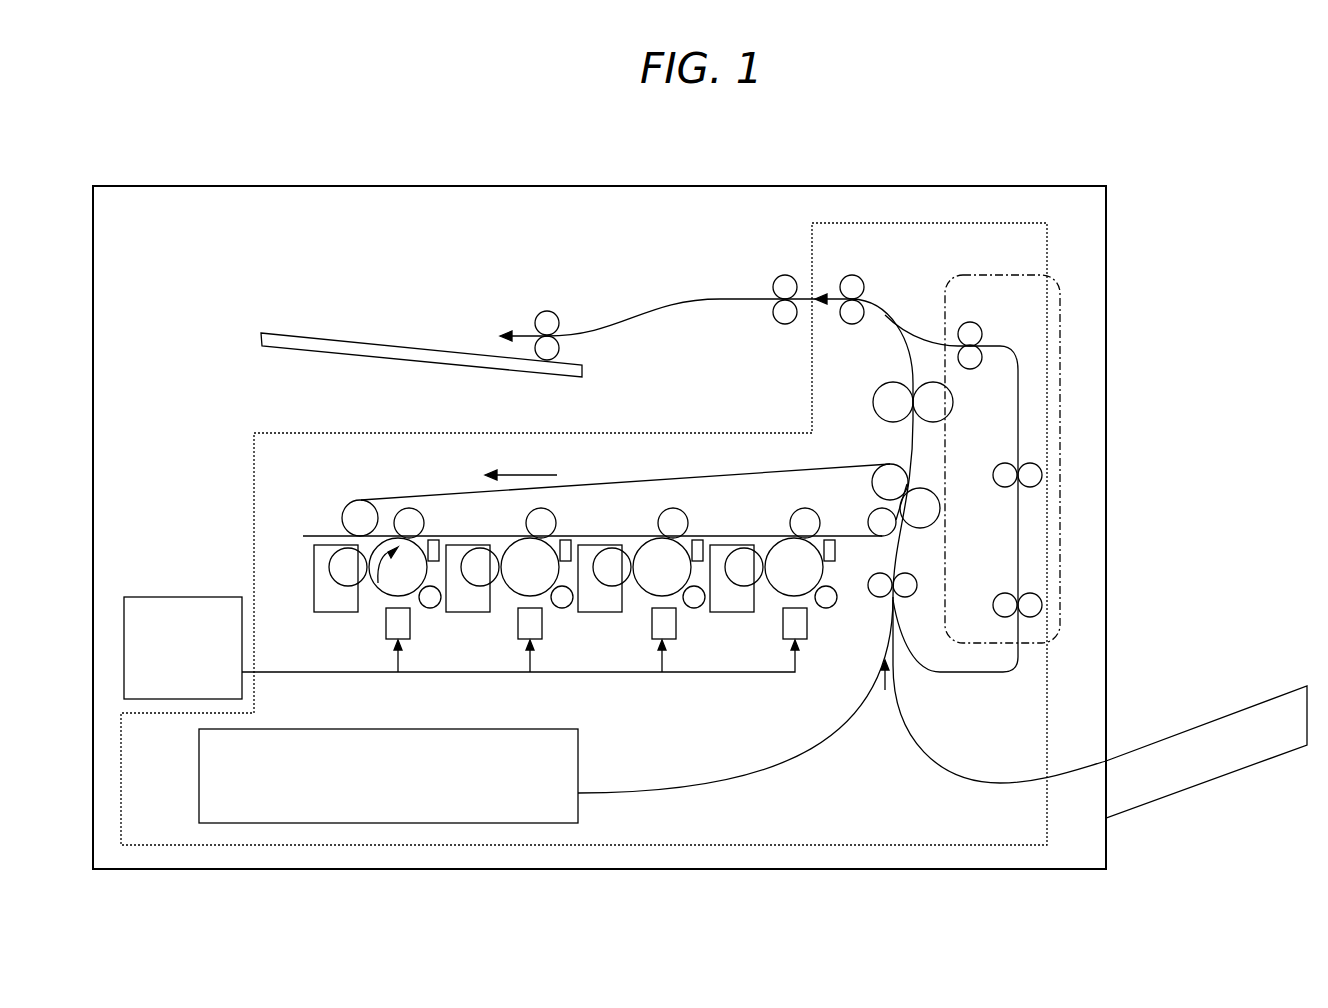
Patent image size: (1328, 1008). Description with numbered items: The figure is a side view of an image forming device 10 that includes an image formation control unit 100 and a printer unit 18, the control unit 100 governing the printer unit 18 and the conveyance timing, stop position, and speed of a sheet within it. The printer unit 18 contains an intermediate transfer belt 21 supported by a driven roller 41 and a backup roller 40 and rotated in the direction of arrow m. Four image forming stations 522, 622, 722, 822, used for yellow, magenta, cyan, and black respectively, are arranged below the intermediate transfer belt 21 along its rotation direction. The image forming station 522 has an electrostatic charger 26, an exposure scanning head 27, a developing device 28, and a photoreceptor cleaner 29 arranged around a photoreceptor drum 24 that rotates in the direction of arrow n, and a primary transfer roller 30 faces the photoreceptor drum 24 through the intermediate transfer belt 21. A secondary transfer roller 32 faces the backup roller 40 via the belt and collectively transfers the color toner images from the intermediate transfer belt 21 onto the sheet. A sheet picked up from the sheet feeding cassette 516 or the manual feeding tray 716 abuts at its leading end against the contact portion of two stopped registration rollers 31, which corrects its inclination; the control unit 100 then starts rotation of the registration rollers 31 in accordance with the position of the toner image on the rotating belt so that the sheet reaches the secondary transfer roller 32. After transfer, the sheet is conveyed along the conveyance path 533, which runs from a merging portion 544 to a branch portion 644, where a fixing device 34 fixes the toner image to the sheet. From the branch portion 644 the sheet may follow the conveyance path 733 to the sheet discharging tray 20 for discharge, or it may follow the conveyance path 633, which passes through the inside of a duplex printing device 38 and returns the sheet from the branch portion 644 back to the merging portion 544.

The image forming device 10 is at (258, 168).
The printer unit 18 is at (300, 432).
The sheet discharging tray 20 is at (395, 343).
The intermediate transfer belt 21 is at (688, 478).
The photoreceptor drum 24 is at (372, 552).
The electrostatic charger 26 is at (438, 605).
The exposure scanning head 27 is at (386, 620).
The developing device 28 is at (314, 565).
The photoreceptor cleaner 29 is at (435, 540).
The primary transfer roller 30 is at (412, 508).
The registration rollers 31 is at (876, 600).
The secondary transfer roller 32 is at (921, 528).
The fixing device 34 is at (903, 378).
The duplex printing device 38 is at (1057, 278).
The backup roller 40 is at (872, 482).
The driven roller 41 is at (345, 510).
The image formation control unit 100 is at (155, 597).
The sheet feeding cassette 516 is at (515, 730).
The image forming station 522 is at (417, 617).
The image forming station 622 is at (549, 617).
The image forming station 722 is at (681, 617).
The image forming station 822 is at (773, 610).
The conveyance path 533 is at (906, 458).
The merging portion 544 is at (894, 662).
The conveyance path 633 is at (920, 335).
The branch portion 644 is at (893, 316).
The manual feeding tray 716 is at (1275, 695).
The conveyance path 733 is at (806, 290).
The arrow m is at (523, 473).
The arrow n is at (376, 578).